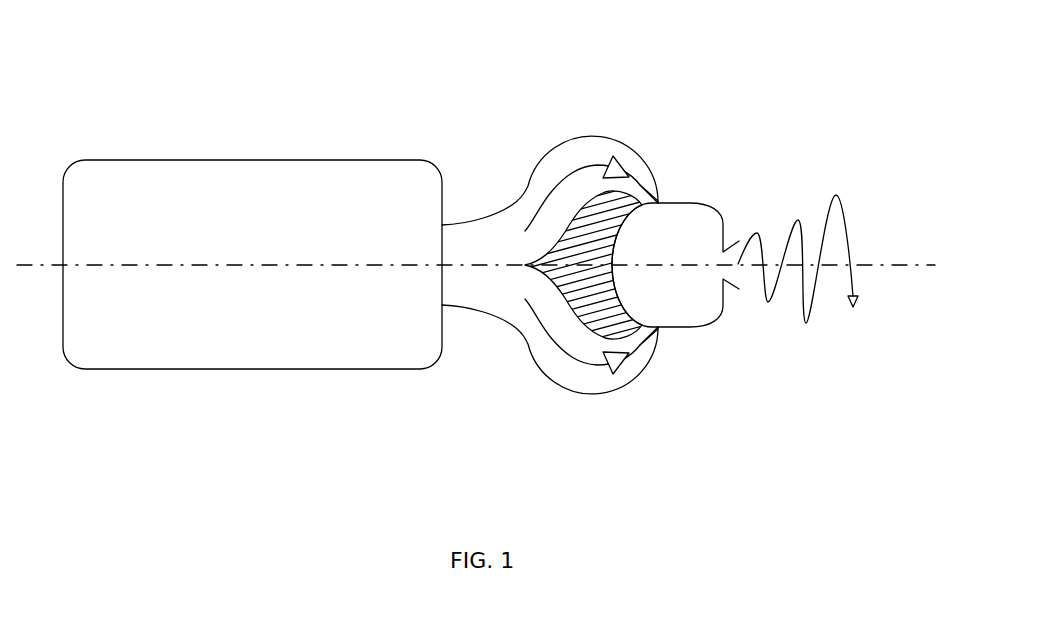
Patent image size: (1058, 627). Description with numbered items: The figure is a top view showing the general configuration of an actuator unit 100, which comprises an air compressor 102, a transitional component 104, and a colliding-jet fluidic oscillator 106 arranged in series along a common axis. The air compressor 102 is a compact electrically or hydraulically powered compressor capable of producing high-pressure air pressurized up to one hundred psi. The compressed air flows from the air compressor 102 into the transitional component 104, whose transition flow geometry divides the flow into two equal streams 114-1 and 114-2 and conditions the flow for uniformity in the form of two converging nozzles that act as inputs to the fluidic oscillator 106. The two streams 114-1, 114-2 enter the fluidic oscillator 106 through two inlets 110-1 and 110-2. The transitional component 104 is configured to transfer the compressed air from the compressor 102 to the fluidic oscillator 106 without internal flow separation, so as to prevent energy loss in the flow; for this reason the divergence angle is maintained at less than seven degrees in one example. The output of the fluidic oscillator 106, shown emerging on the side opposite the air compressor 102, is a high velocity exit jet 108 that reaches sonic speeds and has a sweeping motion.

The actuator unit 100 is at (113, 75).
The air compressor 102 is at (258, 187).
The transitional component 104 is at (601, 147).
The fluidic oscillator 106 is at (702, 233).
The exit jet 108 is at (846, 213).
The inlet 110-1 is at (658, 197).
The inlet 110-2 is at (655, 325).
The stream 114-1 is at (558, 183).
The stream 114-2 is at (567, 353).